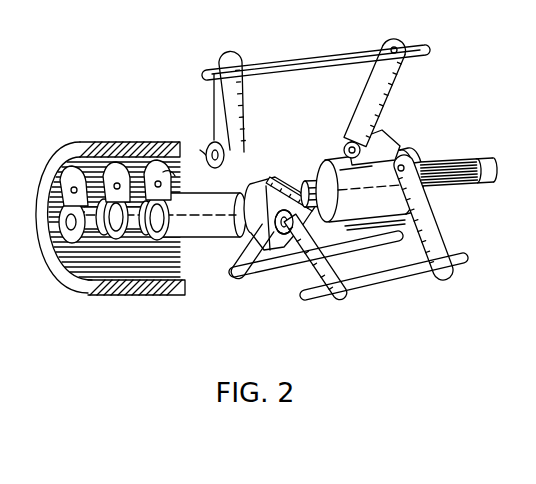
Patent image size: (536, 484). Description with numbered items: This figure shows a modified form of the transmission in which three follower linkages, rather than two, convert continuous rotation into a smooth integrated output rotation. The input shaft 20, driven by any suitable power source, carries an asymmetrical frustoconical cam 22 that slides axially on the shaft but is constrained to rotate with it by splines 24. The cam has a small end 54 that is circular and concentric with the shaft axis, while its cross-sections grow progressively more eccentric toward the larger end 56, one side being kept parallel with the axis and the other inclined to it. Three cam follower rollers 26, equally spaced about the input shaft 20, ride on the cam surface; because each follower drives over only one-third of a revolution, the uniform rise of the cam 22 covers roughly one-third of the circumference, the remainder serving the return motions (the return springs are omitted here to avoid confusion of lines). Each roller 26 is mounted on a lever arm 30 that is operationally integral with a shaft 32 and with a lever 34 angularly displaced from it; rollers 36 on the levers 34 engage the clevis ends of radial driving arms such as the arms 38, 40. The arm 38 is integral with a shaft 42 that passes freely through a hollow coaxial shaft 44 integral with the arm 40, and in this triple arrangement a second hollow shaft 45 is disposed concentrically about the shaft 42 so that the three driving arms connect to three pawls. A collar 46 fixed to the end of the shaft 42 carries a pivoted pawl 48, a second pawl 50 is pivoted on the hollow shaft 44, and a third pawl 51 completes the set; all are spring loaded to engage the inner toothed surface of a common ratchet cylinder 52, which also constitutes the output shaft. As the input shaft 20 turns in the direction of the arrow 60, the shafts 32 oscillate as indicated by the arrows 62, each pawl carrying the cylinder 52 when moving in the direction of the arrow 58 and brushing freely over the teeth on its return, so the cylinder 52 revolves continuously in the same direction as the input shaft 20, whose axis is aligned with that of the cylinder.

The input shaft 20 is at (485, 180).
The asymmetrical frustoconical cam 22 is at (400, 215).
The splines 24 is at (440, 161).
The rollers 26 is at (388, 138).
The lever arms 30 is at (368, 81).
The shafts 32 is at (363, 54).
The levers 34 is at (240, 95).
The rollers 36 is at (214, 134).
The radial driving arm 38 is at (284, 188).
The radial driving arm 40 is at (284, 156).
The shaft 42 is at (248, 187).
The hollow coaxial shaft 44 is at (206, 240).
The hollow shaft 45 is at (152, 238).
The collar 46 is at (68, 236).
The pawl 48 is at (64, 180).
The second pawl 50 is at (139, 144).
The pawl 51 is at (162, 174).
The ratchet cylinder 52 is at (40, 214).
The small end 54 is at (320, 172).
The larger end 56 is at (428, 190).
The arrow 58 is at (36, 155).
The arrow 60 is at (476, 149).
The arrows 62 is at (312, 51).